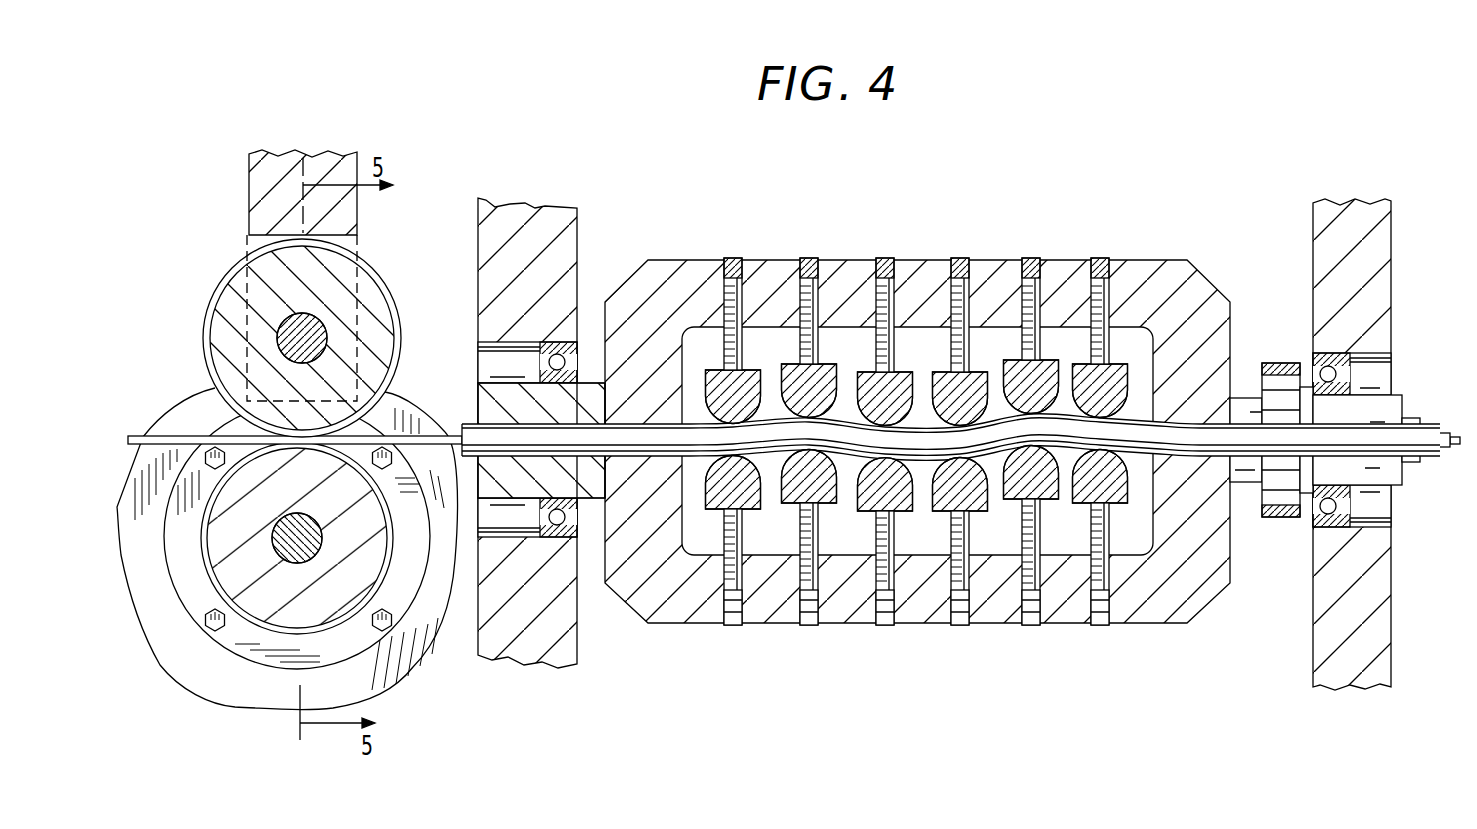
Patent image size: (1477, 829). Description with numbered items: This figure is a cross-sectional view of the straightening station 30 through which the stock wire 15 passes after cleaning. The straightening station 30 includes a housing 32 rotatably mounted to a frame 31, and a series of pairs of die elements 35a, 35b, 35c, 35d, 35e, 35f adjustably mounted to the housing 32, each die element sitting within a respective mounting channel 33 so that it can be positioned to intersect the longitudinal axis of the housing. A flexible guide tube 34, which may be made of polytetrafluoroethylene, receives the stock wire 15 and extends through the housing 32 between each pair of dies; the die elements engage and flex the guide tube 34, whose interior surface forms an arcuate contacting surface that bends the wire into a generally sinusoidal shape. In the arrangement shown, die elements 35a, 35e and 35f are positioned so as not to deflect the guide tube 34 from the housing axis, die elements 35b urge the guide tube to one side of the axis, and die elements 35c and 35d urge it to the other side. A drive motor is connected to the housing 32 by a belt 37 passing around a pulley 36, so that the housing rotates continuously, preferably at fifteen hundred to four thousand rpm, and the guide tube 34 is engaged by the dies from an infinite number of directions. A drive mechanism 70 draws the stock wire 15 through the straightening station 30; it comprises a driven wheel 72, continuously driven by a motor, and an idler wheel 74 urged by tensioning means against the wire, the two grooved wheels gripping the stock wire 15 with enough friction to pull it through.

The stock wire 15 is at (160, 432).
The straightening station 30 is at (956, 477).
The frame 31 is at (566, 260).
The housing 32 is at (1168, 262).
The mounting channel 33 is at (958, 262).
The flexible guide tube 34 is at (1202, 437).
The die element 35a is at (1112, 373).
The die element 35b is at (1048, 375).
The die element 35c is at (990, 377).
The die element 35d is at (913, 378).
The die element 35e is at (833, 383).
The die element 35f is at (762, 373).
The pulley 36 is at (1262, 380).
The belt 37 is at (1280, 382).
The drive mechanism 70 is at (408, 243).
The driven wheel 72 is at (283, 491).
The idler wheel 74 is at (283, 302).